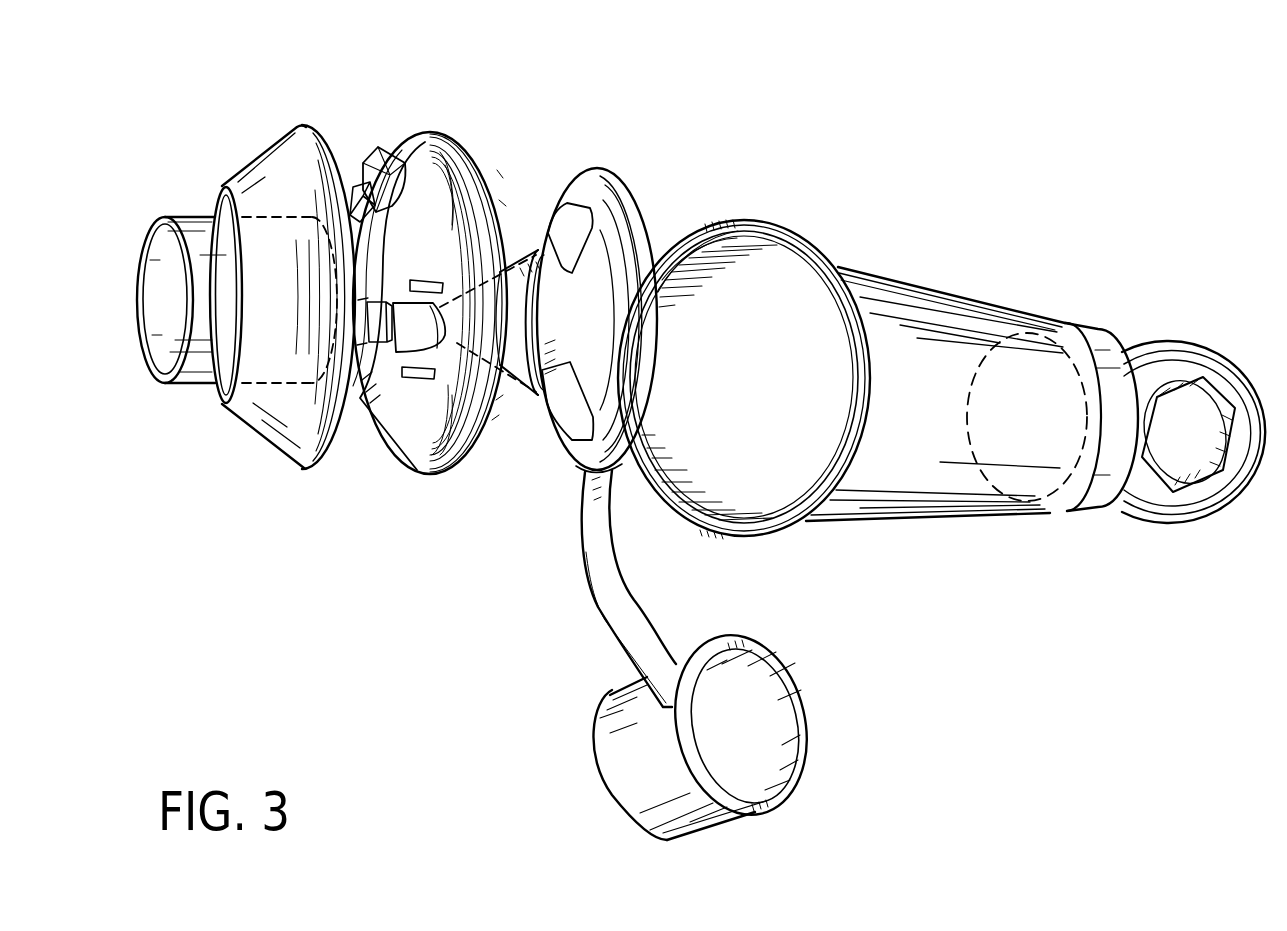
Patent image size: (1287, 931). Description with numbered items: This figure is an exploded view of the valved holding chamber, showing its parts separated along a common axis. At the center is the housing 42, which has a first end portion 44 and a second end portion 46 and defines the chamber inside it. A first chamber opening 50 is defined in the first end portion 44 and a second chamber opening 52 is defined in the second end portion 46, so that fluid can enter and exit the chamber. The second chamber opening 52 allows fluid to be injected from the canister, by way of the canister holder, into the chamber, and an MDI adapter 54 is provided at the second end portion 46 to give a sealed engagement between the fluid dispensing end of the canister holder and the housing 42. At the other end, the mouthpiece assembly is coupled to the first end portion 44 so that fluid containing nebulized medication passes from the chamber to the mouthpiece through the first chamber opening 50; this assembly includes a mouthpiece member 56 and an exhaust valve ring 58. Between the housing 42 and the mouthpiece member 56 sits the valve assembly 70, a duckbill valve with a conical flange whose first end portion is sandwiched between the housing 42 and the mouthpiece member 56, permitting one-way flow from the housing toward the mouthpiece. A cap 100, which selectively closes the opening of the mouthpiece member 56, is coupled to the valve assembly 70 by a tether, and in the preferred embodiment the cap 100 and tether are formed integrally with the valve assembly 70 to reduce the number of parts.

The housing 42 is at (920, 297).
The first end portion 44 is at (707, 225).
The second end portion 46 is at (1093, 348).
The first chamber opening 50 is at (743, 228).
The second chamber opening 52 is at (1043, 503).
The MDI adapter 54 is at (1192, 344).
The mouthpiece member 56 is at (418, 158).
The exhaust valve ring 58 is at (262, 167).
The valve assembly 70 is at (587, 192).
The cap 100 is at (622, 792).